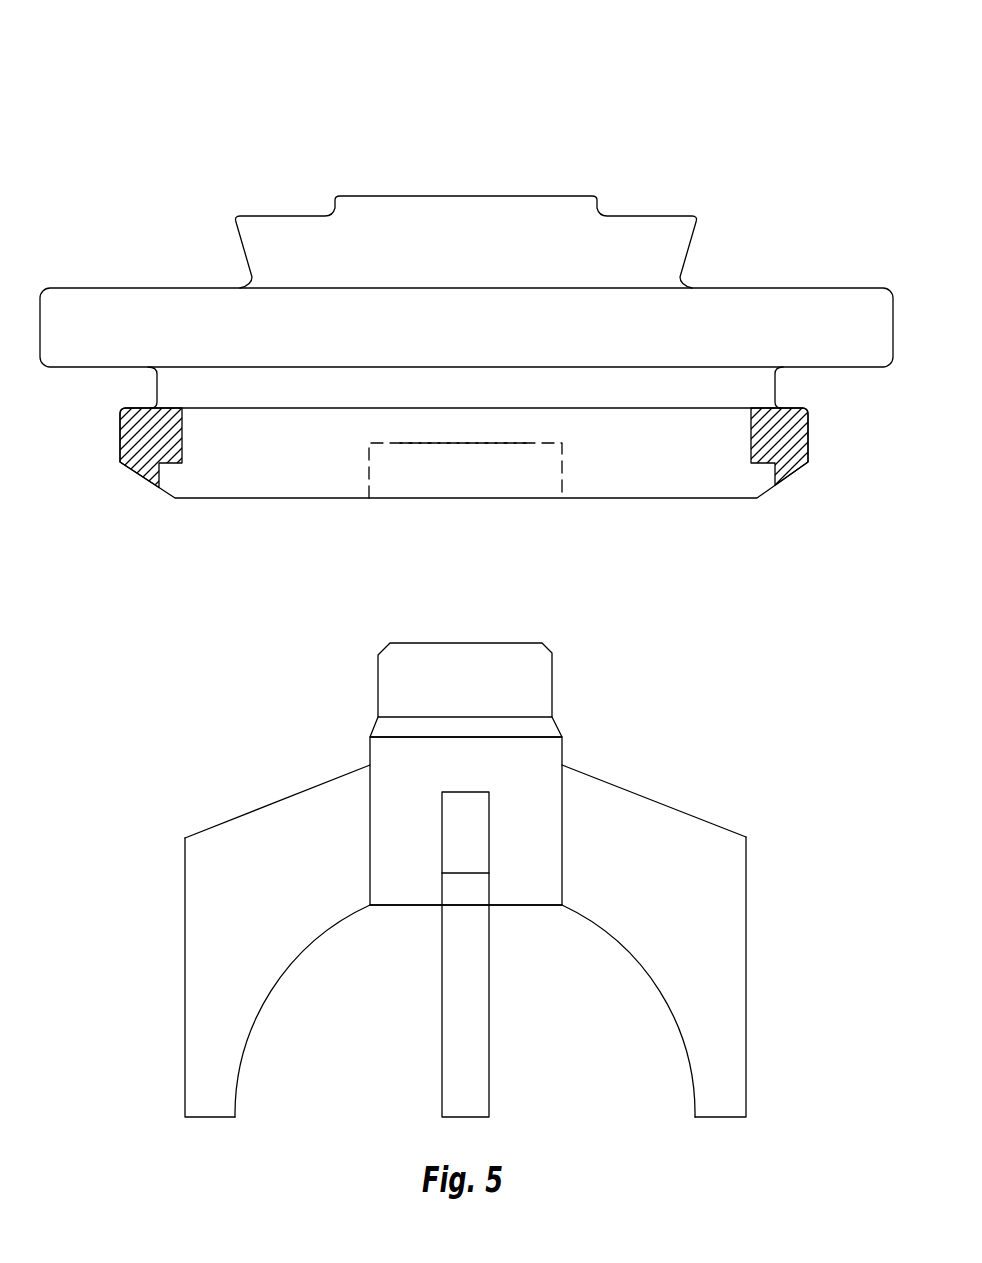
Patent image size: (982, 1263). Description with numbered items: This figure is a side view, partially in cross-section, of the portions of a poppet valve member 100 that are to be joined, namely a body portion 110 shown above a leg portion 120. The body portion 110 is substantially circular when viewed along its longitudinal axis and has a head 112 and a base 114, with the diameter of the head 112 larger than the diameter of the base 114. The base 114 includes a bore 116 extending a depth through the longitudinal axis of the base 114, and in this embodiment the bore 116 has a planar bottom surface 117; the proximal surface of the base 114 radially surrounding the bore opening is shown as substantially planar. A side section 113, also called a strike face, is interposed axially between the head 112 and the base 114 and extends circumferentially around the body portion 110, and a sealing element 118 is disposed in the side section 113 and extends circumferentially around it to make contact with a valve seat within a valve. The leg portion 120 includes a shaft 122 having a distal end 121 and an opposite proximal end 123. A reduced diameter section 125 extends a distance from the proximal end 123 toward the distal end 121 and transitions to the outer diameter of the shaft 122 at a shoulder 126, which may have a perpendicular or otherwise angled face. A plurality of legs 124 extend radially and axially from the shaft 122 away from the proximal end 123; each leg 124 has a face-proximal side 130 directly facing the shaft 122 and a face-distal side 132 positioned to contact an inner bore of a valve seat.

The poppet valve member 100 is at (100, 70).
The body portion 110 is at (823, 205).
The head 112 is at (212, 332).
The side section 113 is at (839, 377).
The base 114 is at (263, 501).
The bore 116 is at (498, 471).
The planar bottom surface 117 is at (413, 447).
The sealing element 118 is at (143, 449).
The leg portion 120 is at (738, 728).
The distal end 121 is at (518, 909).
The shaft 122 is at (483, 776).
The proximal end 123 is at (500, 643).
The leg 124 is at (688, 1017).
The reduced diameter section 125 is at (368, 652).
The shoulder 126 is at (561, 725).
The face-proximal side 130 is at (368, 827).
The face-distal side 132 is at (185, 995).